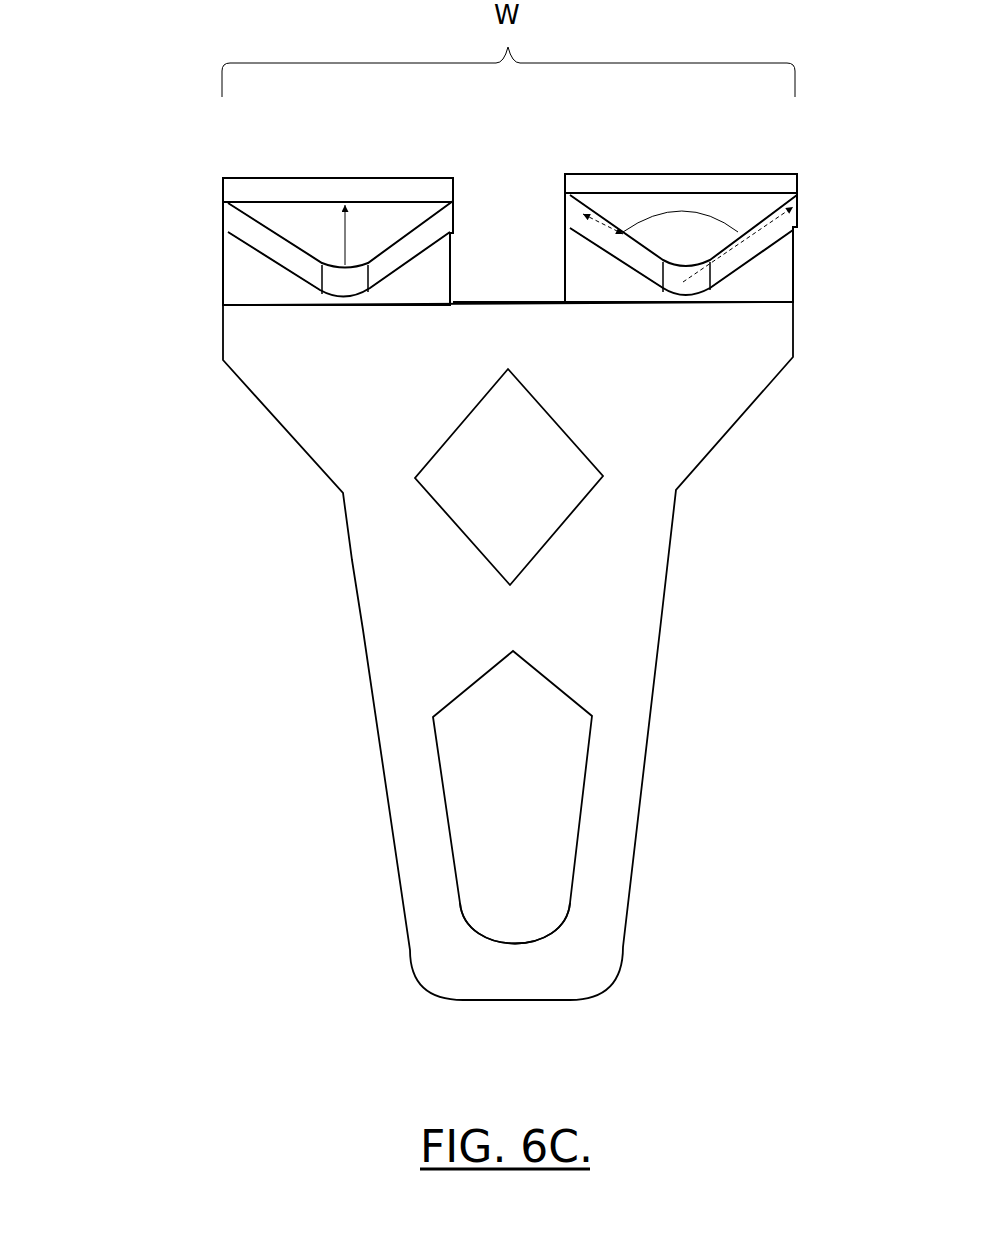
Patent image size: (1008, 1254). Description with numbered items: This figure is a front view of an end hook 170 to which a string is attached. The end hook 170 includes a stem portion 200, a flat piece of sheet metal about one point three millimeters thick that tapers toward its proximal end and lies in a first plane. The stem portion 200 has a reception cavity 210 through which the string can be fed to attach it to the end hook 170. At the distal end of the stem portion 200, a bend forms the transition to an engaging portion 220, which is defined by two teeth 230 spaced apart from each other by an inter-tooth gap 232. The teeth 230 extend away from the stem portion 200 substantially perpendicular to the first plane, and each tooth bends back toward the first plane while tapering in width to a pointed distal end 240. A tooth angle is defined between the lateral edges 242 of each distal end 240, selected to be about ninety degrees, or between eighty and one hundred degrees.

The end hook 170 is at (242, 702).
The stem portion 200 is at (650, 770).
The reception cavity 210 is at (475, 790).
The engaging portion 220 is at (548, 838).
The teeth 230 is at (335, 185).
The inter-tooth gap 232 is at (512, 215).
The distal end 240 is at (350, 278).
The lateral edges 242 is at (270, 245).